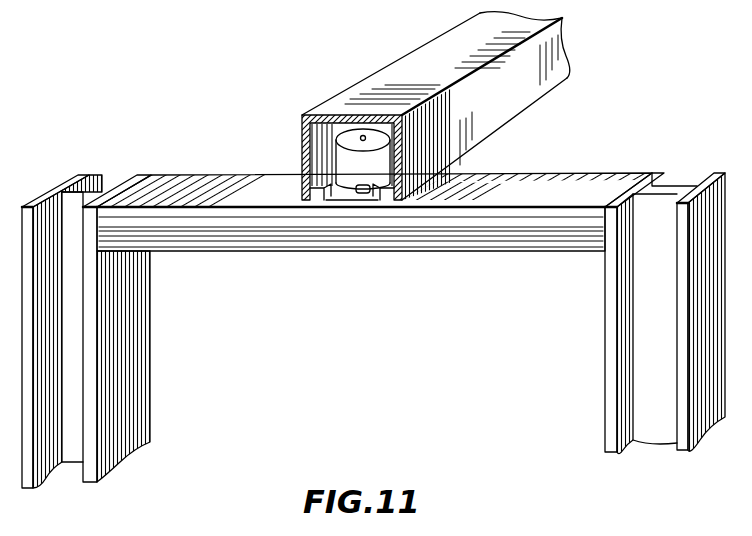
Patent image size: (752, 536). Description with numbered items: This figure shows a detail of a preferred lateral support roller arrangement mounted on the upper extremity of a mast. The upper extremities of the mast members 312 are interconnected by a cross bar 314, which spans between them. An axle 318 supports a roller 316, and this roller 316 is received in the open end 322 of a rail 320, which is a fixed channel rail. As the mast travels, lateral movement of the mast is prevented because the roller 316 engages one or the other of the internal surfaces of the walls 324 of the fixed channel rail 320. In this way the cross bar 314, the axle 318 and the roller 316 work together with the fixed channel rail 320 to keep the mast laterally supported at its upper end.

The mast members 312 is at (135, 337).
The cross bar 314 is at (227, 227).
The roller 316 is at (348, 165).
The axle 318 is at (358, 134).
The rail 320 is at (401, 75).
The open end 322 is at (364, 203).
The walls 324 is at (504, 108).